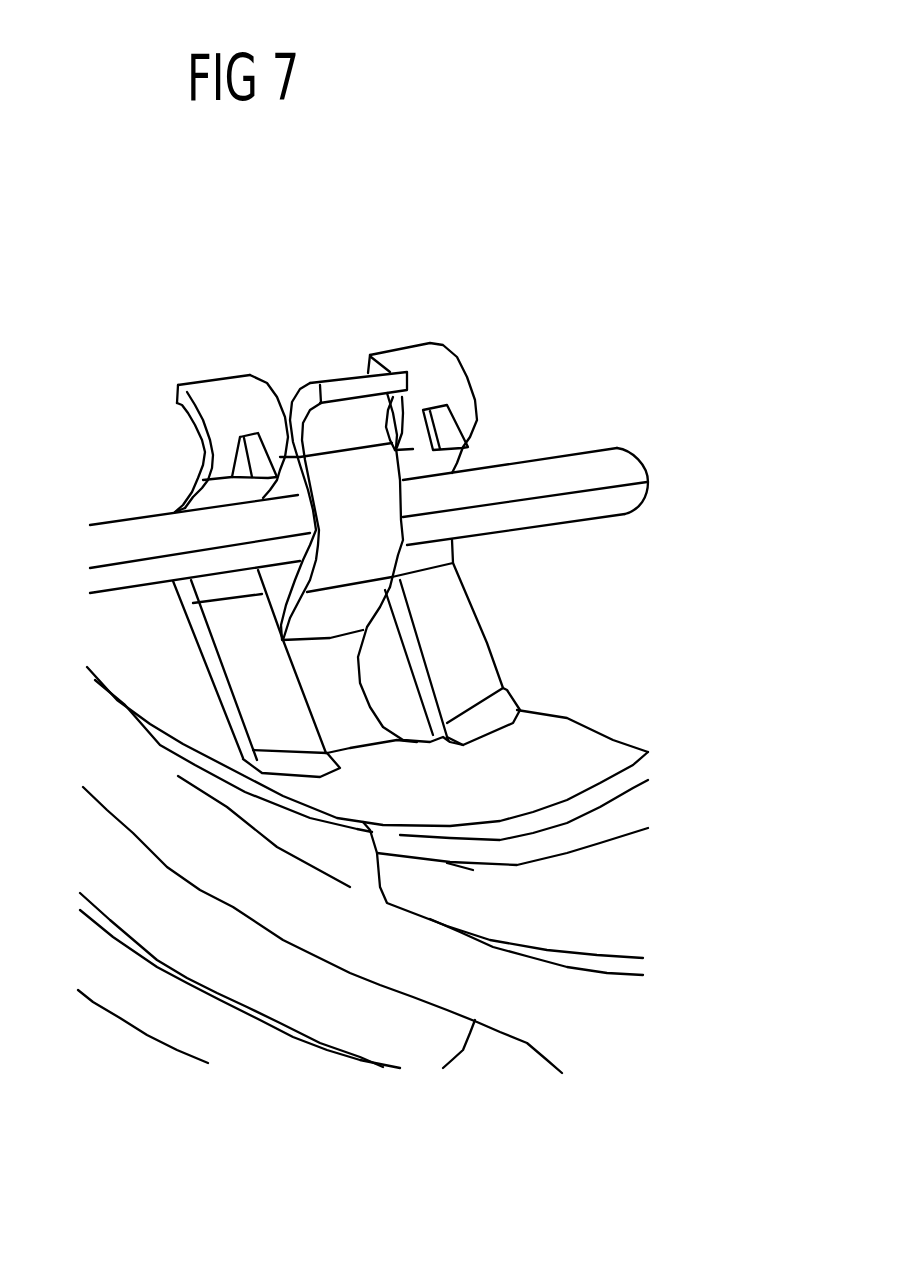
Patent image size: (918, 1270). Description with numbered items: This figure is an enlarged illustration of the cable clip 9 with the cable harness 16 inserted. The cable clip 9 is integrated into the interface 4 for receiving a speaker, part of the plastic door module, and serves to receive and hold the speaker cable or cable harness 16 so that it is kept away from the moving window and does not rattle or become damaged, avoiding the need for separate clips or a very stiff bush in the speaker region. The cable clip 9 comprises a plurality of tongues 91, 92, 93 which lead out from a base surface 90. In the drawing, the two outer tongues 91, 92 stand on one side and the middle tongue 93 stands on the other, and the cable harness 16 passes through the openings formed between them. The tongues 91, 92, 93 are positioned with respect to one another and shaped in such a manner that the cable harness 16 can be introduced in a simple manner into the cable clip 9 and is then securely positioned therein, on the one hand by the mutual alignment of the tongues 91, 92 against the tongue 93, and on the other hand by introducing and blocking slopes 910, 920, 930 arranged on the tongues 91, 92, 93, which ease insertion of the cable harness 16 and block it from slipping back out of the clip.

The interface for receiving a speaker 4 is at (133, 797).
The cable clip 9 is at (378, 495).
The cable harness 16 is at (605, 465).
The base surface 90 is at (570, 772).
The tongue 91 is at (205, 520).
The tongue 92 is at (455, 479).
The tongue 93 is at (359, 493).
The introducing and blocking slope 910 is at (253, 450).
The introducing and blocking slope 920 is at (448, 418).
The introducing and blocking slope 930 is at (294, 378).